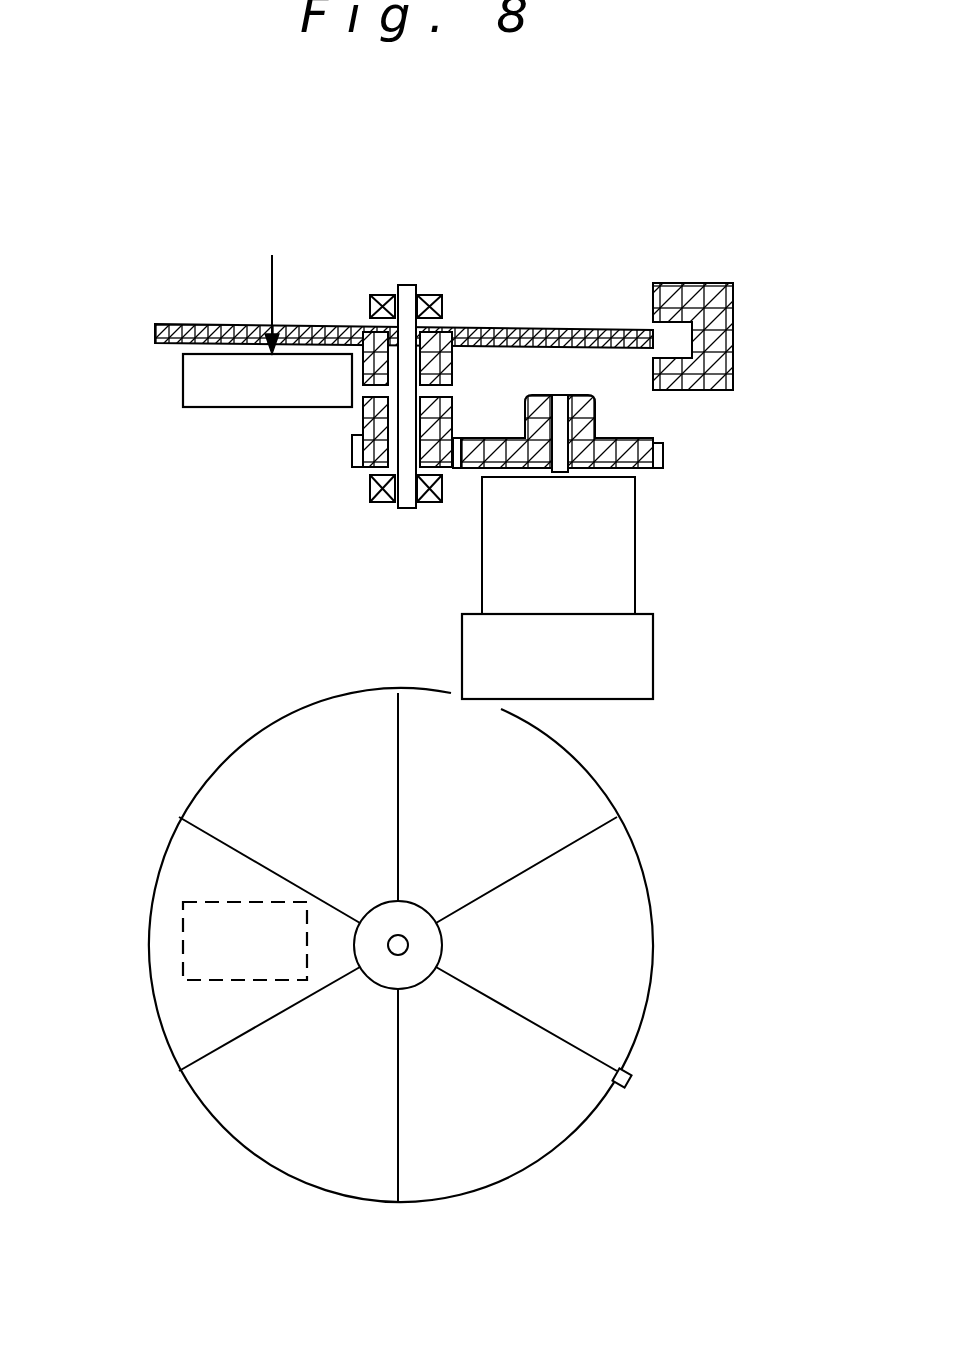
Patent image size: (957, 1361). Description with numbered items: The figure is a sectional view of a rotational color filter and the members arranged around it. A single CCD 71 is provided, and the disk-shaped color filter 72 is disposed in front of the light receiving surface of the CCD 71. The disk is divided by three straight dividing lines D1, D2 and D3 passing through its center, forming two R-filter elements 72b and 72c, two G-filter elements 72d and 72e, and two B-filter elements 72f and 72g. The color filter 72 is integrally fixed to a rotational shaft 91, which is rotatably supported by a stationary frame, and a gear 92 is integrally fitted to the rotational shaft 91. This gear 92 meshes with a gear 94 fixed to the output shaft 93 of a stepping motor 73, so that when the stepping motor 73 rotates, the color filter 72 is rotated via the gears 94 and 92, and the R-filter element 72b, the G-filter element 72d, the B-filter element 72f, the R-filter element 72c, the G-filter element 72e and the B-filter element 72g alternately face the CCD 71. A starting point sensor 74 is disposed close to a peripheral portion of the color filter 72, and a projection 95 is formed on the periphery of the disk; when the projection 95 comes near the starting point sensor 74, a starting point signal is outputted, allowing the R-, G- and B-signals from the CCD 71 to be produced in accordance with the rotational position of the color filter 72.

The CCD 71 is at (190, 381).
The color filter 72 is at (578, 338).
The R-filter element 72b is at (152, 885).
The R-filter element 72c is at (622, 970).
The G-filter element 72d is at (290, 1140).
The G-filter element 72e is at (568, 786).
The B-filter element 72f is at (530, 1135).
The B-filter element 72g is at (272, 754).
The stepping motor 73 is at (635, 578).
The starting point sensor 74 is at (725, 366).
The rotational shaft 91 is at (405, 292).
The gear 92 is at (352, 445).
The output shaft 93 is at (558, 470).
The gear 94 is at (665, 458).
The projection 95 is at (630, 1085).
The dividing line D1 is at (205, 832).
The dividing line D2 is at (205, 1052).
The dividing line D3 is at (398, 1157).